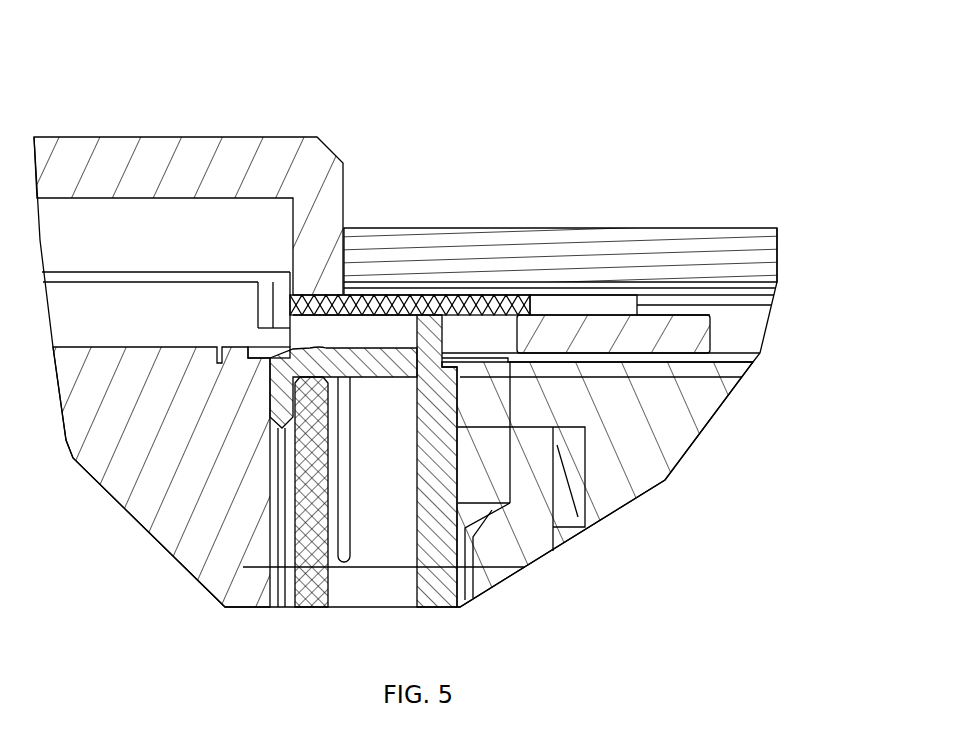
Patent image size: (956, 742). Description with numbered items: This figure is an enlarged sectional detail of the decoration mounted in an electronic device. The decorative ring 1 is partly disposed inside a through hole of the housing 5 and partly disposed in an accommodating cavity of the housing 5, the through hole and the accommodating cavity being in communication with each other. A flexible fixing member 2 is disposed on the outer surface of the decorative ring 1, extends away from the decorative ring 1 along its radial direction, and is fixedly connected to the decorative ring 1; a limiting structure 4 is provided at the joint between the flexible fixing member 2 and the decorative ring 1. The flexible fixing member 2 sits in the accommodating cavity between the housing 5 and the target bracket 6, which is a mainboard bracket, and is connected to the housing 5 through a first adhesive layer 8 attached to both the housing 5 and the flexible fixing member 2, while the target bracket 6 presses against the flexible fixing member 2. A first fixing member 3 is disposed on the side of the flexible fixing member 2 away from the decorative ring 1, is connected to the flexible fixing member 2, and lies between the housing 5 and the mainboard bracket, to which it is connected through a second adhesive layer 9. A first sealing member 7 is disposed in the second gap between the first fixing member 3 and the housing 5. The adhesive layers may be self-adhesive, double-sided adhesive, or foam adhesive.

The decorative ring 1 is at (208, 156).
The flexible fixing member 2 is at (430, 194).
The first fixing member 3 is at (694, 379).
The limiting structure 4 is at (234, 222).
The housing 5 is at (560, 150).
The target bracket 6 is at (597, 504).
The first sealing member 7 is at (650, 240).
The first adhesive layer 8 is at (560, 207).
The second adhesive layer 9 is at (639, 447).